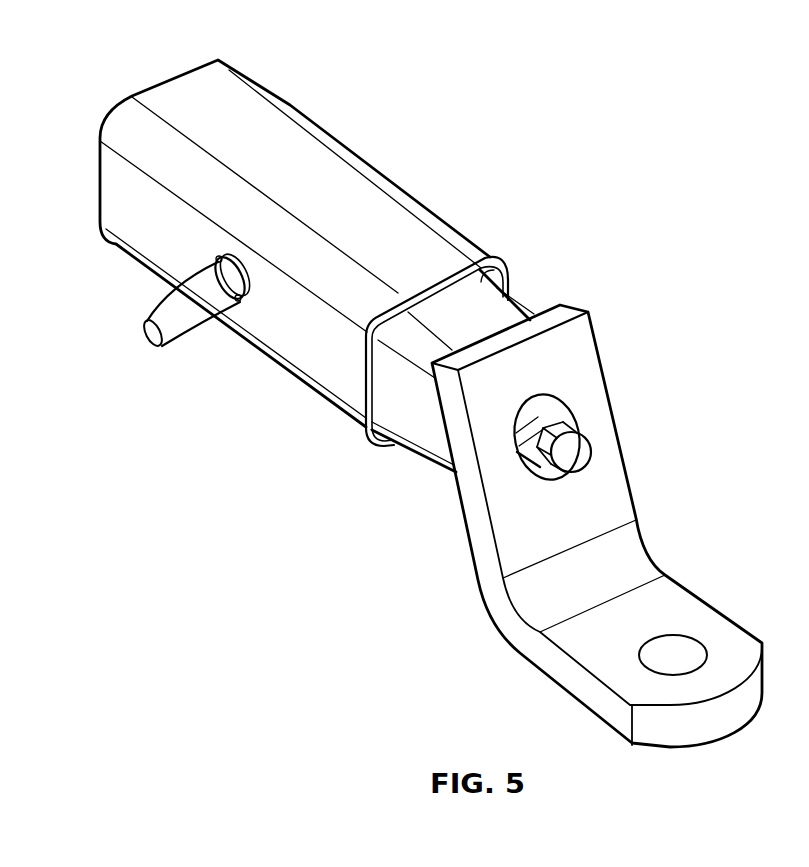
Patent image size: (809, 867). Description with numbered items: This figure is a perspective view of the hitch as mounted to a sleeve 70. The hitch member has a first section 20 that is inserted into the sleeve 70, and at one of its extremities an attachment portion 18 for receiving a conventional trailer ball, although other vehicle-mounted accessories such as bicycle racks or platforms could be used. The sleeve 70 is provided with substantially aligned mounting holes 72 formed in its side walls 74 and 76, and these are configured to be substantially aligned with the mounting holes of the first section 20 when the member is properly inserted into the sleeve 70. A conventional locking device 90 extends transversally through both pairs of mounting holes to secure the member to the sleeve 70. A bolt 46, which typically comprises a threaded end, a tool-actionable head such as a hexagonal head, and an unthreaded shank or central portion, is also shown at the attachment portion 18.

The attachment portion 18 is at (635, 563).
The first section 20 is at (425, 427).
The bolt 46 is at (542, 428).
The sleeve 70 is at (302, 150).
The mounting holes 72 is at (242, 275).
The side wall 74 is at (325, 372).
The side wall 76 is at (505, 287).
The locking device 90 is at (175, 333).